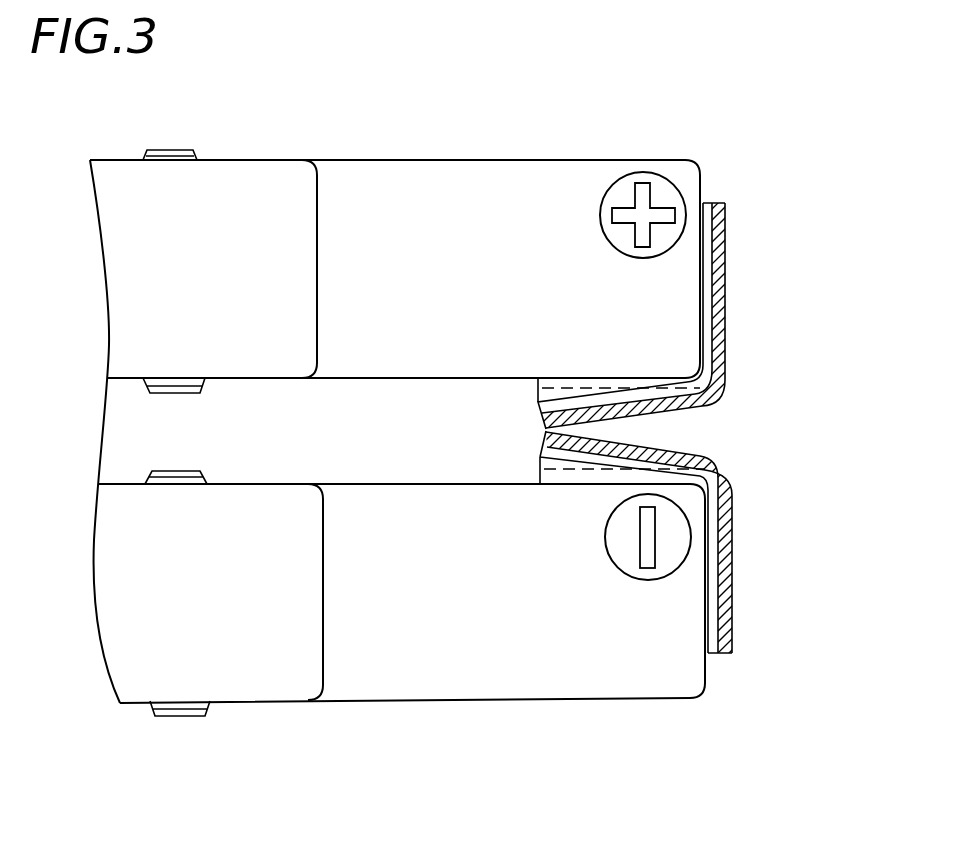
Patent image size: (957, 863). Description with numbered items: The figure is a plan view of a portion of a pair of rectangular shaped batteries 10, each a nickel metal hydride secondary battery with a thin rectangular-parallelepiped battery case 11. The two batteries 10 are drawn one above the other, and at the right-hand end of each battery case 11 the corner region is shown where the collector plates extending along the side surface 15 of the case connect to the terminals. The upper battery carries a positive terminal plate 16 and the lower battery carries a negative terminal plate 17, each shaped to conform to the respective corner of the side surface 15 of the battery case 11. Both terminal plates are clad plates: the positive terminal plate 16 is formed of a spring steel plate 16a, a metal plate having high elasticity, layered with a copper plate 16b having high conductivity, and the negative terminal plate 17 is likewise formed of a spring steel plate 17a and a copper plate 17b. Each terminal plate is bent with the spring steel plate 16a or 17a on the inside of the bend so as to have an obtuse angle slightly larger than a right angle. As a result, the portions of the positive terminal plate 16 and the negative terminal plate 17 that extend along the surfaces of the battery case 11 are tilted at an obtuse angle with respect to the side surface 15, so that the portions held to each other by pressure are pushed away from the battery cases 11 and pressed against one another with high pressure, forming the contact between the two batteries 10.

The rectangular shaped battery 10 is at (408, 146).
The battery case 11 is at (468, 158).
The side surface 15 is at (703, 280).
The positive terminal plate 16 is at (631, 268).
The spring steel plate 16a is at (705, 202).
The copper plate 16b is at (718, 202).
The negative terminal plate 17 is at (636, 591).
The spring steel plate 17a is at (713, 657).
The copper plate 17b is at (727, 655).